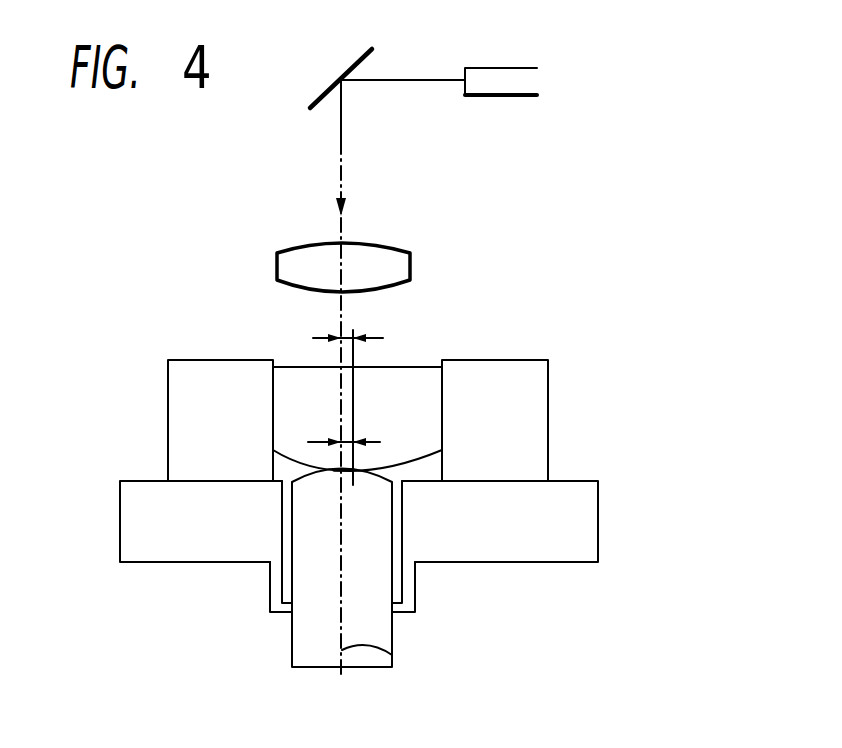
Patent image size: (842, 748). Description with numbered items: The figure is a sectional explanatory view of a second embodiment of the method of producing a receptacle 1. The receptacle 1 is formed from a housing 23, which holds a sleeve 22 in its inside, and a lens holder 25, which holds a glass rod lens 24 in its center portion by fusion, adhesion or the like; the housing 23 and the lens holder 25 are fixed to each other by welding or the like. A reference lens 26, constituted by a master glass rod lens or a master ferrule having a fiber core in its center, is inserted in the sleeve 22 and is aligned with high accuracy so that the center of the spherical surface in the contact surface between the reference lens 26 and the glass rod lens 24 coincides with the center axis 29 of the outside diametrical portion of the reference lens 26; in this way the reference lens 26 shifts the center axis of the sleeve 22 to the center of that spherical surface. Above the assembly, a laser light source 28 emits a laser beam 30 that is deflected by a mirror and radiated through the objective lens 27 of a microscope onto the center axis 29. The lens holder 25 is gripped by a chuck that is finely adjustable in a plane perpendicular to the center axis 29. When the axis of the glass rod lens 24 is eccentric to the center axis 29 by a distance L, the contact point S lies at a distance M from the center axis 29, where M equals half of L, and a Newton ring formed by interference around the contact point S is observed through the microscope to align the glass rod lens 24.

The receptacle 1 is at (178, 337).
The sleeve 22 is at (398, 587).
The housing 23 is at (578, 498).
The glass rod lens 24 is at (423, 376).
The lens holder 25 is at (543, 380).
The reference lens 26 is at (375, 638).
The objective lens 27 is at (412, 265).
The laser light source 28 is at (515, 77).
The center axis 29 is at (392, 655).
The laser beam 30 is at (342, 118).
The distance L is at (348, 396).
The distance M is at (346, 426).
The contact point S is at (339, 473).